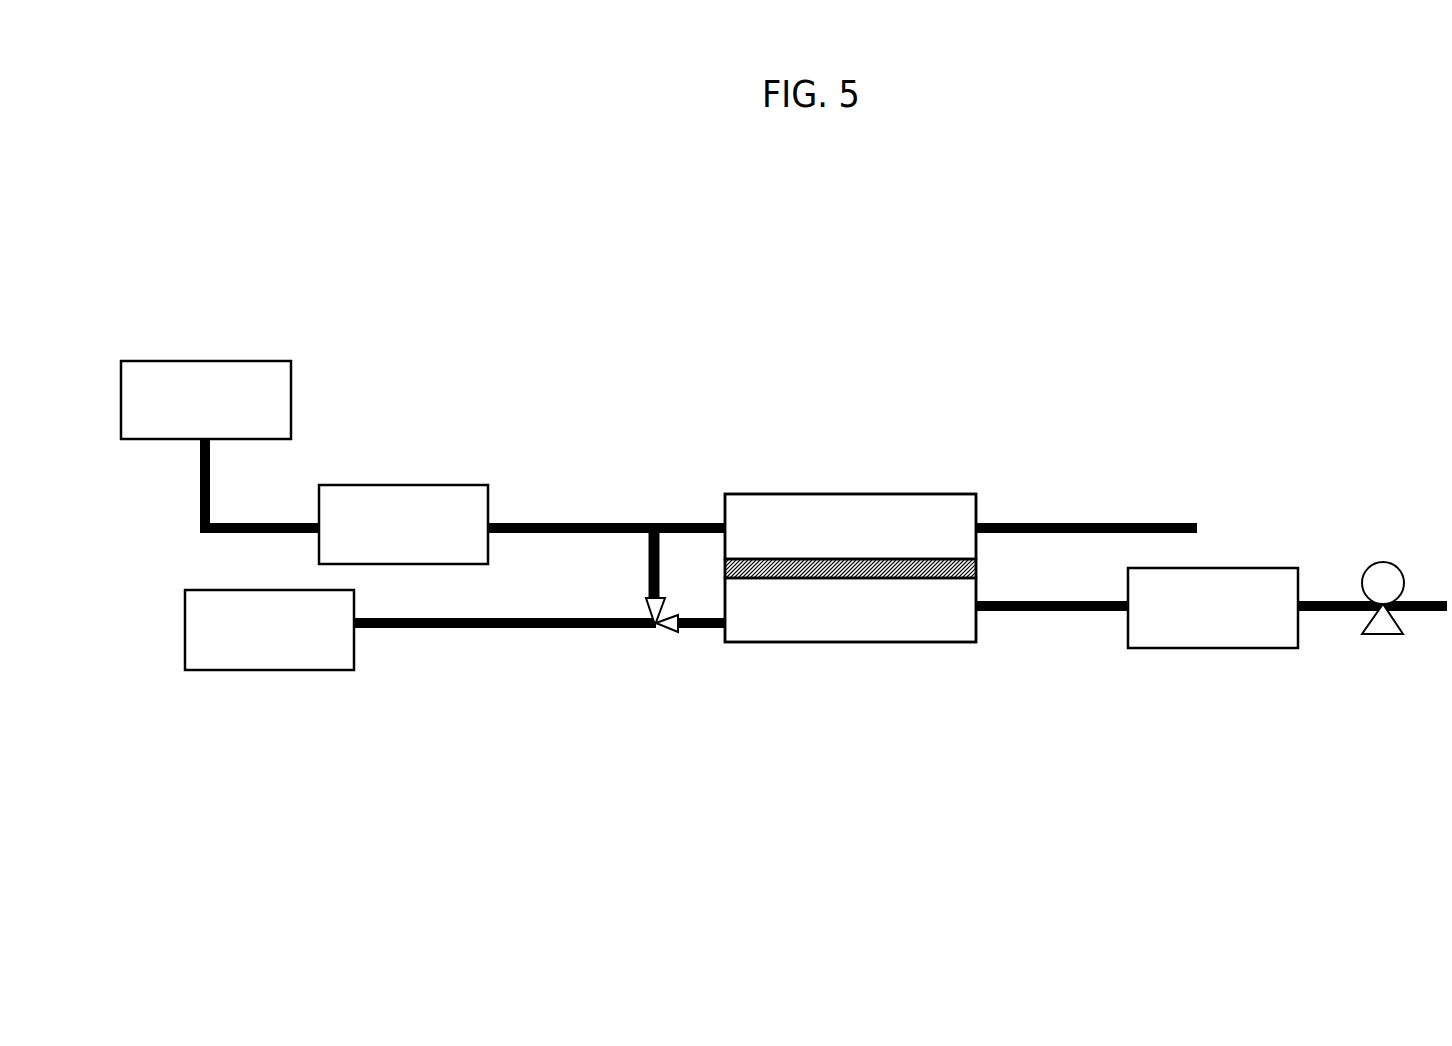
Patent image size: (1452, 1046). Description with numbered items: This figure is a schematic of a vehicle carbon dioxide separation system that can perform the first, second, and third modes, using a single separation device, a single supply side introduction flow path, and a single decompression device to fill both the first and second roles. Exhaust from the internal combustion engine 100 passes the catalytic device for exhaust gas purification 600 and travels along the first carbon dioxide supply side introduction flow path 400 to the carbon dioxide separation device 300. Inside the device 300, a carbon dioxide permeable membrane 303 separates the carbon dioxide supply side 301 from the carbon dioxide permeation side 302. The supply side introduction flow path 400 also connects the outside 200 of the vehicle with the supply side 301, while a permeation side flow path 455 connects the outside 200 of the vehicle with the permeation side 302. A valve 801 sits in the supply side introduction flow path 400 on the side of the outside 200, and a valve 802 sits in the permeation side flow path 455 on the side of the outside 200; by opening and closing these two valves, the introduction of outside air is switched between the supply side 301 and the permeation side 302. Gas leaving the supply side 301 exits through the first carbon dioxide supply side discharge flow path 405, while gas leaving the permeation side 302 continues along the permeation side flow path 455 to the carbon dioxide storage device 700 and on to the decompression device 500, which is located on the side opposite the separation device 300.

The internal combustion engine 100 is at (258, 388).
The outside of the vehicle 200 is at (285, 638).
The first CO2 separation device 300 is at (850, 562).
The CO2 supply side 301 is at (928, 508).
The CO2 permeation side 302 is at (918, 630).
The CO2 permeable membrane 303 is at (805, 573).
The first CO2 supply side introduction flow path 400 is at (698, 523).
The first CO2 supply side discharge flow path 405 is at (1112, 522).
The first CO2 permeation side flow path 455 is at (706, 630).
The decompression device 500 is at (1378, 577).
The catalytic device for exhaust gas purification 600 is at (417, 512).
The CO2 storage device 700 is at (1213, 625).
The valve 801 is at (650, 603).
The valve 802 is at (676, 632).